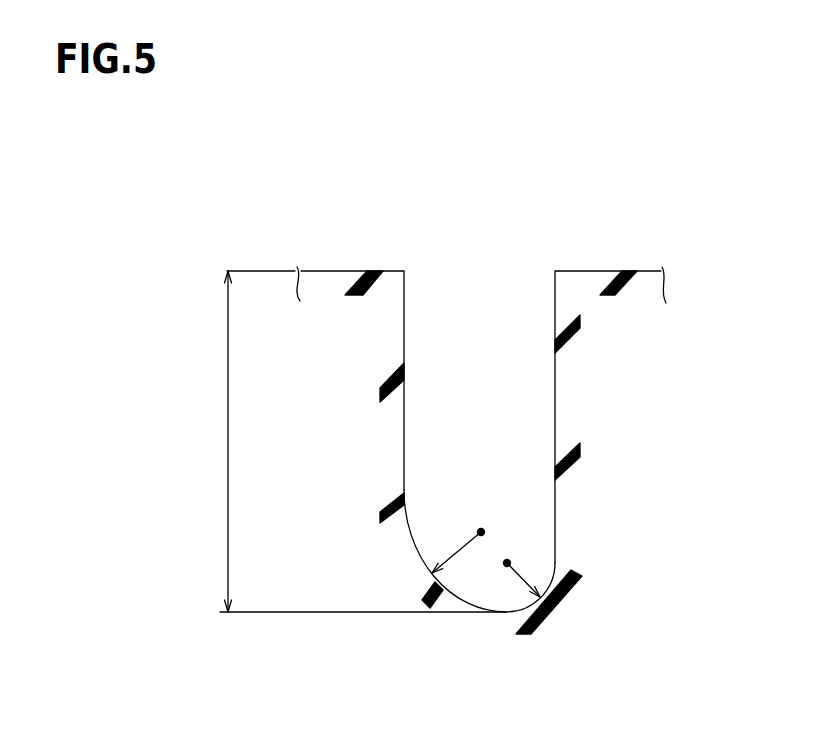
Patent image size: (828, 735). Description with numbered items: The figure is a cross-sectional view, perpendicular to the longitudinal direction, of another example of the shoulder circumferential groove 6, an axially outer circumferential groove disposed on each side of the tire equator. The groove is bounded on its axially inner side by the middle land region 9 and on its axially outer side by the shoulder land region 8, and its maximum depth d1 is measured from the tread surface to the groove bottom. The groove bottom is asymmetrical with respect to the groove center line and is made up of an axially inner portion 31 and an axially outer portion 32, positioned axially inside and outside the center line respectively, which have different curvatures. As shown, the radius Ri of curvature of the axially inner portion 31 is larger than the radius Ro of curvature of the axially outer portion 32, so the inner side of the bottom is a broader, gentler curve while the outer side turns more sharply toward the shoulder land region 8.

The middle land region 9 is at (333, 271).
The shoulder land region 8 is at (642, 271).
The shoulder circumferential groove 6 is at (477, 299).
The axially inner portion 31 is at (423, 560).
The axially outer portion 32 is at (549, 589).
The radius of curvature of the axially inner portion Ri is at (467, 544).
The radius of curvature of the axially outer portion Ro is at (518, 575).
The maximum depth of the shoulder circumferential groove d1 is at (348, 441).